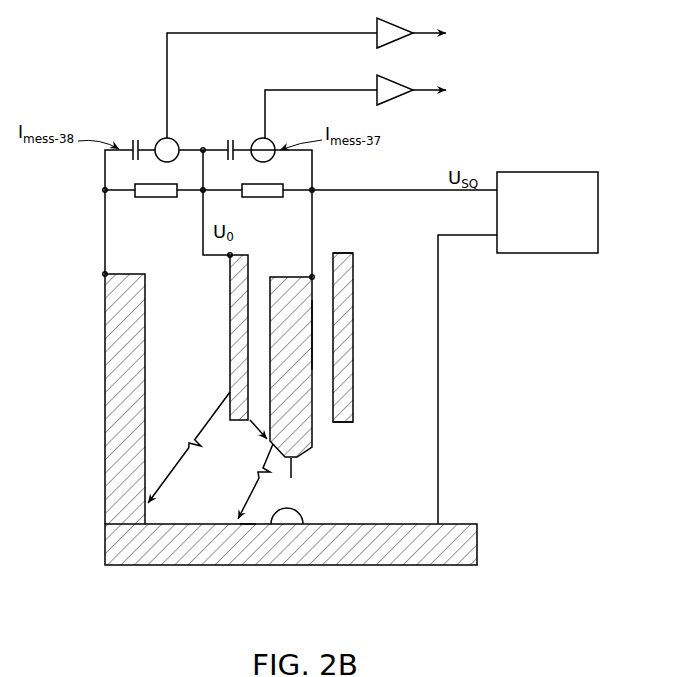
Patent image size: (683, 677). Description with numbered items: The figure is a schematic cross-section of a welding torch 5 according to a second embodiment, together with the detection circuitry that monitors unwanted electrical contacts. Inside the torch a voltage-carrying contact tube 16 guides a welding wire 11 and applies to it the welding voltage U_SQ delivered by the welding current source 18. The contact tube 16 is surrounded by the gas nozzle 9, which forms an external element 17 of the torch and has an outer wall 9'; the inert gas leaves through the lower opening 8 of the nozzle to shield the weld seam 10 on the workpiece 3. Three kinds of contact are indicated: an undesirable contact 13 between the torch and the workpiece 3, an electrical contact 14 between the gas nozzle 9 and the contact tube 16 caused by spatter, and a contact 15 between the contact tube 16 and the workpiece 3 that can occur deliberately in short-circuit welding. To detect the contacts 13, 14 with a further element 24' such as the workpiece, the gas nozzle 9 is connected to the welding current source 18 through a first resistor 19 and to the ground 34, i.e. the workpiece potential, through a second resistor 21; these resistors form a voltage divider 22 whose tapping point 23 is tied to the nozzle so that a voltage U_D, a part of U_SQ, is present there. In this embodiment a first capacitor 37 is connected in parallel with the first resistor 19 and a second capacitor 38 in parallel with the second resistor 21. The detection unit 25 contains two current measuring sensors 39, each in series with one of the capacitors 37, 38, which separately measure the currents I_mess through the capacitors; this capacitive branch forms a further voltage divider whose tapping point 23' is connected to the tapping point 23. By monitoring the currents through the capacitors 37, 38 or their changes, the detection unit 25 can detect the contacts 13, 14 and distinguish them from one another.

The workpiece 3 is at (478, 535).
The welding torch 5 is at (368, 360).
The lower opening 8 is at (326, 430).
The gas nozzle 9 is at (360, 337).
The outer wall 9' is at (215, 337).
The weld seam 10 is at (283, 514).
The welding wire 11 is at (293, 468).
The contact 13 is at (170, 480).
The electrical contact 14 is at (253, 430).
The contact 15 is at (248, 527).
The contact tube 16 is at (313, 283).
The external element 17 is at (353, 398).
The welding current source 18 is at (598, 181).
The first resistor 19 is at (265, 198).
The second resistor 21 is at (145, 197).
The voltage divider 22 is at (249, 172).
The tapping point 23 is at (188, 217).
The tapping point 23' is at (208, 104).
The further element 24' is at (94, 399).
The detection unit 25 is at (410, 105).
The ground 34 is at (461, 237).
The first capacitor 37 is at (232, 140).
The second capacitor 38 is at (135, 140).
The current measuring sensor 39 is at (168, 138).